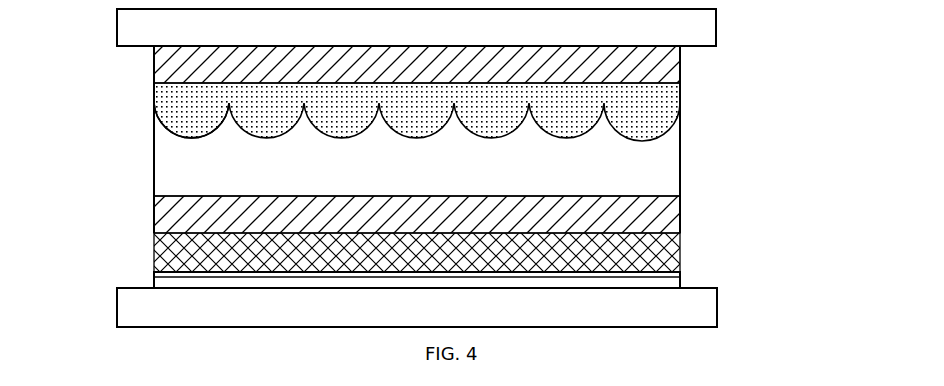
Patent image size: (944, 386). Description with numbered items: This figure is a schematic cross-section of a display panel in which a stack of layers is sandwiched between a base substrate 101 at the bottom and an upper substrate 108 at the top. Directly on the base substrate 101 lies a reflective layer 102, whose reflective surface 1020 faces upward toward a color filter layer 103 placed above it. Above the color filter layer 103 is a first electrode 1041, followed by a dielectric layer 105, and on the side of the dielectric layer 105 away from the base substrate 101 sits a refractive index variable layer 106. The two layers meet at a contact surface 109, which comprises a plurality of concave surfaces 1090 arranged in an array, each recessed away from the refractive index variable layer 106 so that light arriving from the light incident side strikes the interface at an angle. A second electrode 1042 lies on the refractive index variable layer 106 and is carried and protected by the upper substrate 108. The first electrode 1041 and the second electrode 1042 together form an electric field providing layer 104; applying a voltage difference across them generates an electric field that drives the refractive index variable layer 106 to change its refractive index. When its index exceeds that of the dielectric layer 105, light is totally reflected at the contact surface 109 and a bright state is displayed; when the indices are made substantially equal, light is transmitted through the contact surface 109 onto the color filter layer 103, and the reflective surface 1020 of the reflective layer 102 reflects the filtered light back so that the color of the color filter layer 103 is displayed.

The base substrate 101 is at (623, 308).
The reflective layer 102 is at (630, 282).
The color filter layer 103 is at (623, 253).
The electric field providing layer 104 is at (525, 139).
The first electrode 1041 is at (630, 216).
The second electrode 1042 is at (630, 67).
The dielectric layer 105 is at (623, 171).
The refractive index variable layer 106 is at (630, 103).
The upper substrate 108 is at (623, 28).
The contact surface 109 is at (647, 140).
The concave surface 1090 is at (128, 89).
The reflective surface 1020 is at (111, 228).